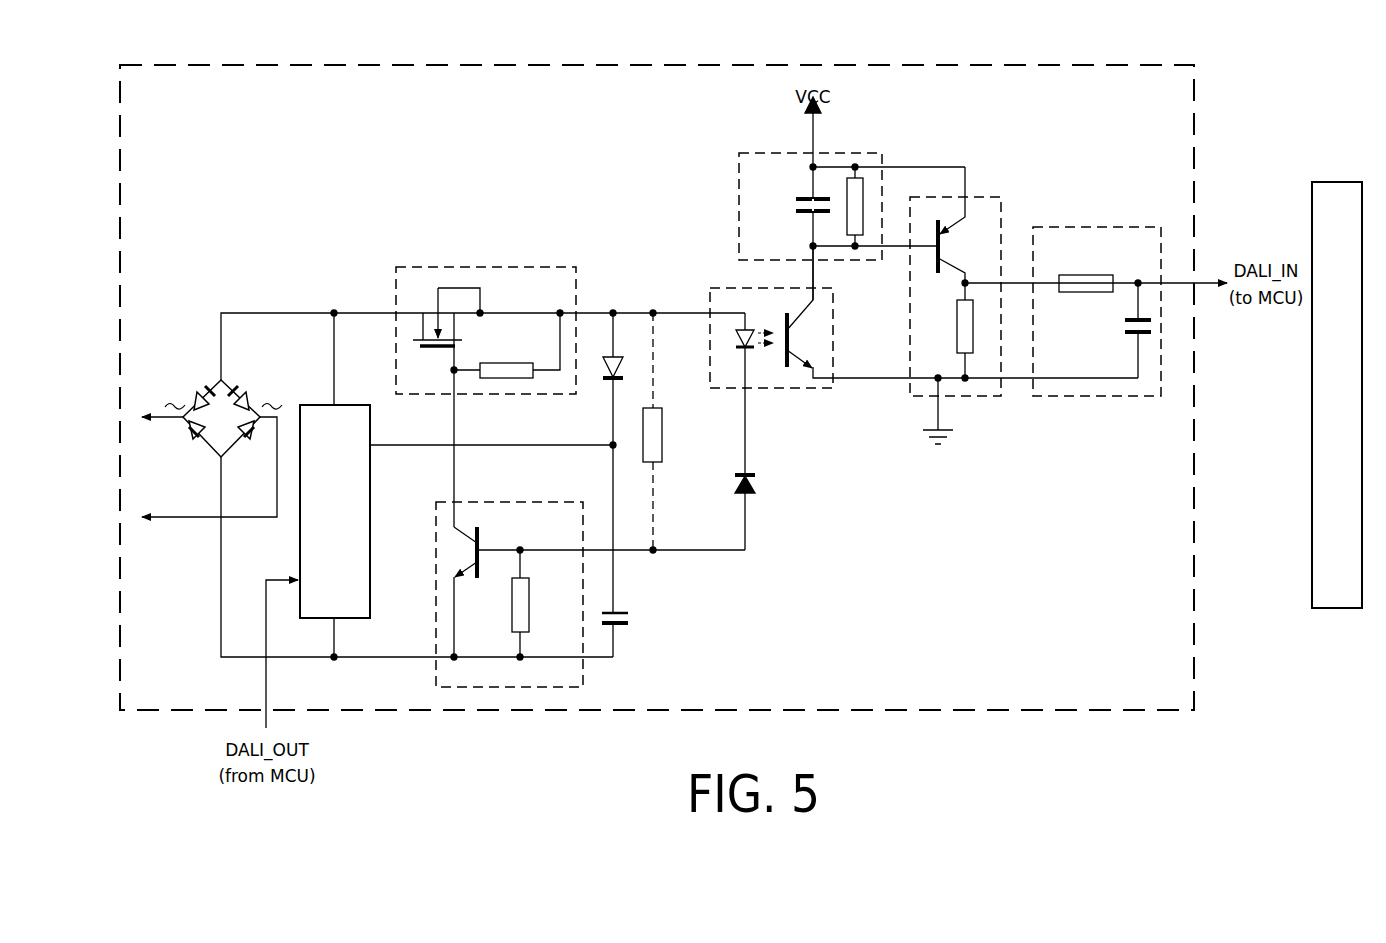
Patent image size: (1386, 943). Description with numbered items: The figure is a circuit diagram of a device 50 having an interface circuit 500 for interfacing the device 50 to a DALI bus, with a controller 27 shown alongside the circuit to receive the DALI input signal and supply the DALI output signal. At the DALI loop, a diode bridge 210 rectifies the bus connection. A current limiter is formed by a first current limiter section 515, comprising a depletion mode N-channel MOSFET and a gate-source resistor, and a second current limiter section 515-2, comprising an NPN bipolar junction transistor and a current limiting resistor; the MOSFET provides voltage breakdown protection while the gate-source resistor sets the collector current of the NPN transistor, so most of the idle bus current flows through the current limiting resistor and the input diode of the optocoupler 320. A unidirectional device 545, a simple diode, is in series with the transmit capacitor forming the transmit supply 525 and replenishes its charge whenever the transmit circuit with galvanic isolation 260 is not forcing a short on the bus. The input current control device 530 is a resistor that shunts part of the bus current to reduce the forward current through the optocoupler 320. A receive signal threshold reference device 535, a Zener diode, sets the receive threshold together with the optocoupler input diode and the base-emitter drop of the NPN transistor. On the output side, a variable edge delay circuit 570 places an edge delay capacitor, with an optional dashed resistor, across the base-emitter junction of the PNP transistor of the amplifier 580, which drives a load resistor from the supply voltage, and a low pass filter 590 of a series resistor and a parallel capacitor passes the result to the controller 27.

The interface circuit 500 is at (665, 65).
The device 50 is at (1270, 731).
The controller 27 is at (1337, 182).
The diode bridge 210 is at (186, 376).
The transmit circuit with galvanic isolation 260 is at (310, 405).
The first current limiter section 515 is at (458, 267).
The second current limiter section 515-2 is at (518, 687).
The unidirectional device 545 is at (624, 370).
The input current control device 530 is at (666, 450).
The transmit supply 525 is at (630, 612).
The receive signal threshold reference device 535 is at (757, 478).
The optocoupler 320 is at (710, 288).
The variable edge delay circuit 570 is at (739, 180).
The amplifier 580 is at (993, 197).
The low pass filter 590 is at (1115, 227).